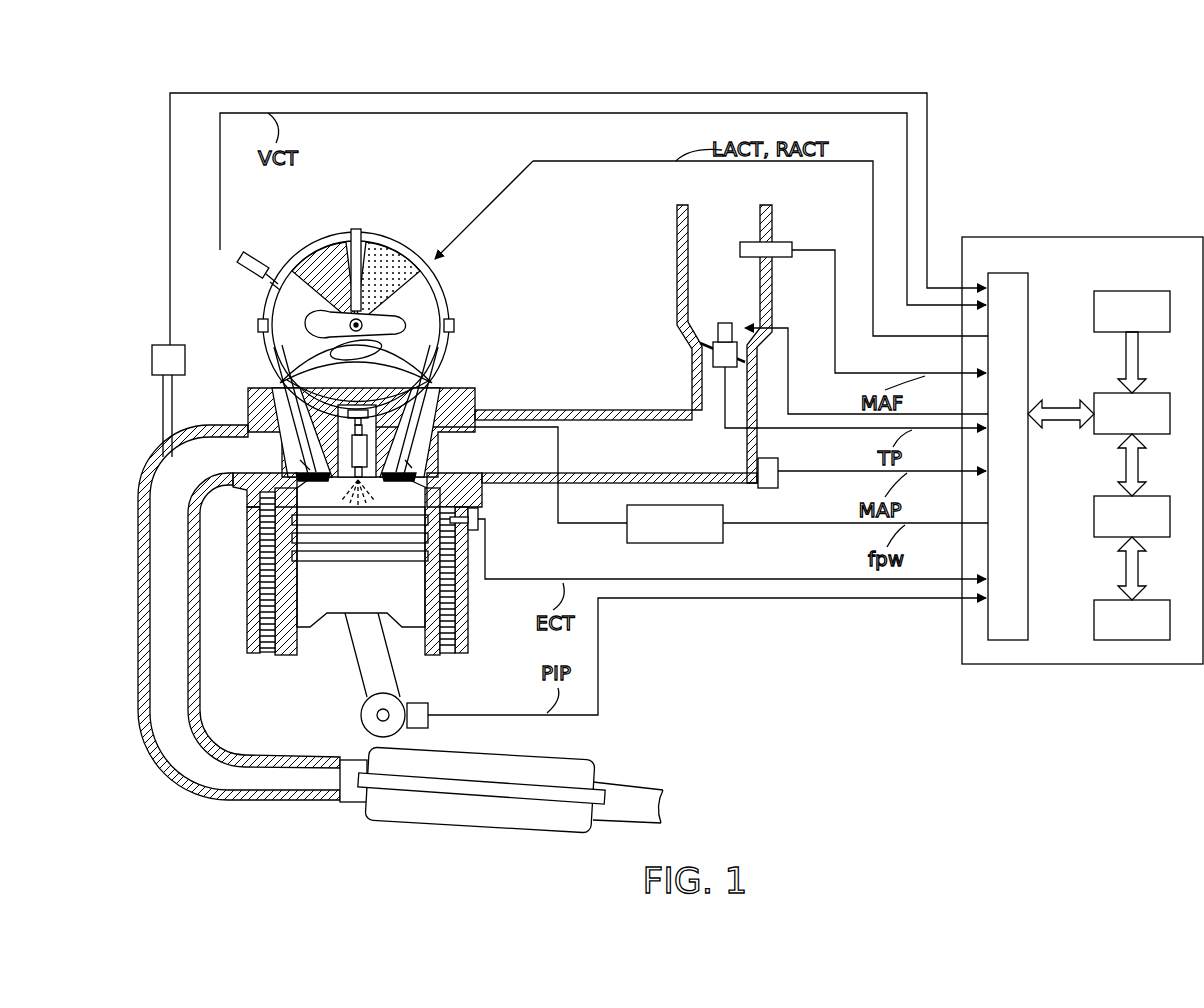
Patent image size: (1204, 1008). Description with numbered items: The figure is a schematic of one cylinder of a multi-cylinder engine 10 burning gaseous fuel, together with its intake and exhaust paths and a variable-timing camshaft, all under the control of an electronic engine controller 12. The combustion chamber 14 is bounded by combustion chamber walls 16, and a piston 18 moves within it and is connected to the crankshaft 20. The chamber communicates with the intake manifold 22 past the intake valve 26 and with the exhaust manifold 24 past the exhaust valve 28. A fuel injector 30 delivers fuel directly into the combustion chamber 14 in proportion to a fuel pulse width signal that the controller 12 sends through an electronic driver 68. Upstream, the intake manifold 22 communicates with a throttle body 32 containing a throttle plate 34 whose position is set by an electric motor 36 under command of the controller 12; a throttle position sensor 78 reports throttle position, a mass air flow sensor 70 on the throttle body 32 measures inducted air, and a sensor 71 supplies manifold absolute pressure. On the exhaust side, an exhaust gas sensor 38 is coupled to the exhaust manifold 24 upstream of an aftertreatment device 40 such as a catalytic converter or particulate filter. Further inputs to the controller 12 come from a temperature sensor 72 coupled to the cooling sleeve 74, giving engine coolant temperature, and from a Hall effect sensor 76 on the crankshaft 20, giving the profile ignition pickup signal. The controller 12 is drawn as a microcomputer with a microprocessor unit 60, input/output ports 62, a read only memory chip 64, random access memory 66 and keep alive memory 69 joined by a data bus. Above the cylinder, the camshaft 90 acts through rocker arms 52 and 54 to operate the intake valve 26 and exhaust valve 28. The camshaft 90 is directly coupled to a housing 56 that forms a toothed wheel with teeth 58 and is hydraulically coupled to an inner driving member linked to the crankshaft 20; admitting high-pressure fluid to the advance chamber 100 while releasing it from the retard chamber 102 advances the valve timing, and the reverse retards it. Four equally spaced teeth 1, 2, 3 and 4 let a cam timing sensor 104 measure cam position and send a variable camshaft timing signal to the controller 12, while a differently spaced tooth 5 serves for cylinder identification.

The engine 10 is at (1069, 102).
The electronic engine controller 12 is at (913, 424).
The combustion chamber 14 is at (296, 520).
The combustion chamber walls 16 is at (284, 655).
The piston 18 is at (355, 615).
The crankshaft 20 is at (362, 716).
The intake manifold 22 is at (616, 446).
The exhaust manifold 24 is at (143, 521).
The intake valve 26 is at (410, 463).
The exhaust valve 28 is at (305, 466).
The fuel injector 30 is at (352, 425).
The throttle body 32 is at (700, 378).
The throttle plate 34 is at (715, 345).
The electric motor 36 is at (728, 323).
The exhaust gas sensor 38 is at (160, 345).
The aftertreatment device 40 is at (530, 760).
The rocker arm 52 is at (284, 383).
The rocker arm 54 is at (432, 383).
The housing 56 is at (268, 346).
The teeth 58 is at (455, 297).
The microprocessor unit 60 is at (1160, 393).
The input/output ports 62 is at (1030, 297).
The read only memory chip 64 is at (1150, 291).
The random access memory 66 is at (1160, 496).
The electronic driver 68 is at (725, 520).
The keep alive memory 69 is at (1160, 600).
The mass air flow sensor 70 is at (780, 242).
The manifold absolute pressure sensor 71 is at (780, 465).
The temperature sensor 72 is at (480, 518).
The cooling sleeve 74 is at (470, 625).
The Hall effect sensor 76 is at (430, 708).
The throttle position sensor 78 is at (712, 355).
The camshaft 90 is at (320, 326).
The advance chamber 100 is at (312, 262).
The retard chamber 102 is at (400, 259).
The cam timing sensor 104 is at (248, 276).
The tooth 1 is at (350, 237).
The tooth 2 is at (456, 327).
The tooth 3 is at (366, 414).
The tooth 4 is at (258, 326).
The tooth 5 is at (272, 288).